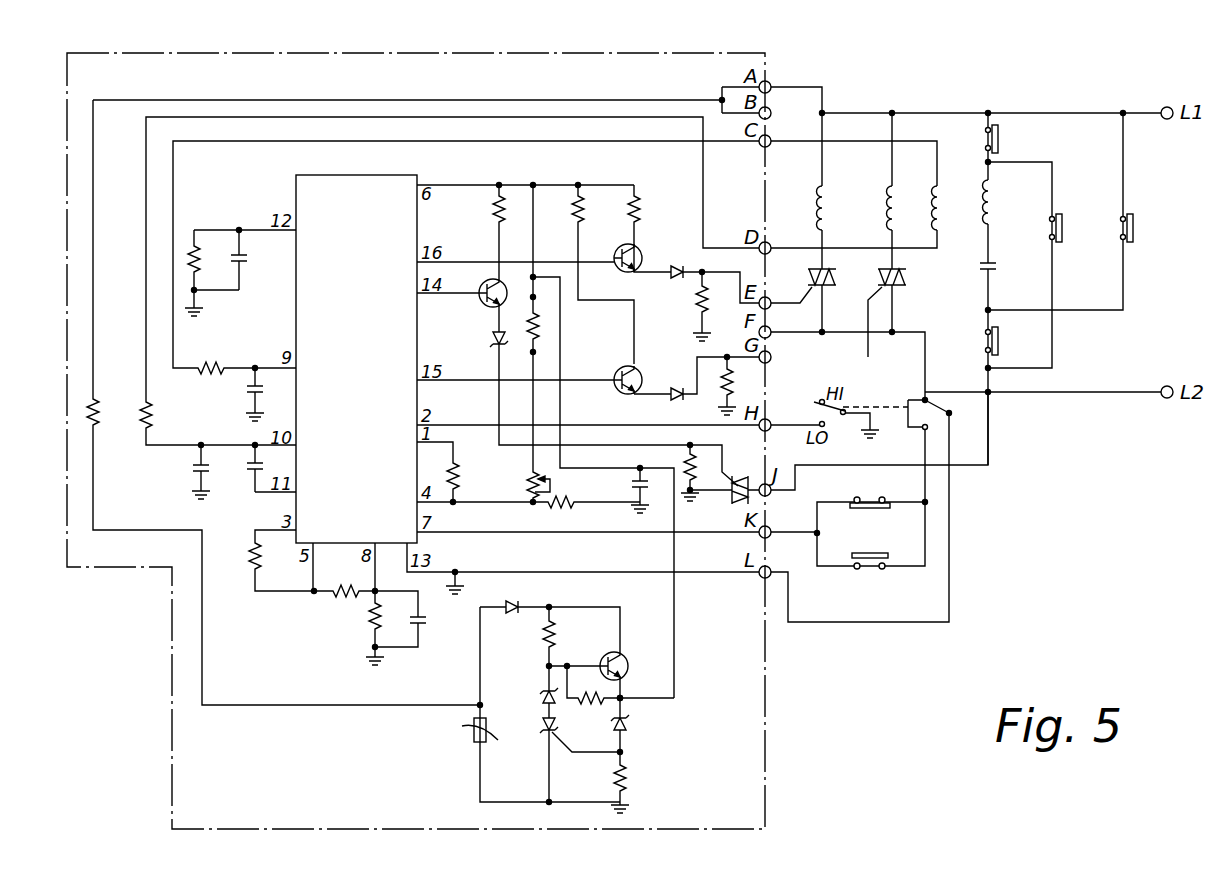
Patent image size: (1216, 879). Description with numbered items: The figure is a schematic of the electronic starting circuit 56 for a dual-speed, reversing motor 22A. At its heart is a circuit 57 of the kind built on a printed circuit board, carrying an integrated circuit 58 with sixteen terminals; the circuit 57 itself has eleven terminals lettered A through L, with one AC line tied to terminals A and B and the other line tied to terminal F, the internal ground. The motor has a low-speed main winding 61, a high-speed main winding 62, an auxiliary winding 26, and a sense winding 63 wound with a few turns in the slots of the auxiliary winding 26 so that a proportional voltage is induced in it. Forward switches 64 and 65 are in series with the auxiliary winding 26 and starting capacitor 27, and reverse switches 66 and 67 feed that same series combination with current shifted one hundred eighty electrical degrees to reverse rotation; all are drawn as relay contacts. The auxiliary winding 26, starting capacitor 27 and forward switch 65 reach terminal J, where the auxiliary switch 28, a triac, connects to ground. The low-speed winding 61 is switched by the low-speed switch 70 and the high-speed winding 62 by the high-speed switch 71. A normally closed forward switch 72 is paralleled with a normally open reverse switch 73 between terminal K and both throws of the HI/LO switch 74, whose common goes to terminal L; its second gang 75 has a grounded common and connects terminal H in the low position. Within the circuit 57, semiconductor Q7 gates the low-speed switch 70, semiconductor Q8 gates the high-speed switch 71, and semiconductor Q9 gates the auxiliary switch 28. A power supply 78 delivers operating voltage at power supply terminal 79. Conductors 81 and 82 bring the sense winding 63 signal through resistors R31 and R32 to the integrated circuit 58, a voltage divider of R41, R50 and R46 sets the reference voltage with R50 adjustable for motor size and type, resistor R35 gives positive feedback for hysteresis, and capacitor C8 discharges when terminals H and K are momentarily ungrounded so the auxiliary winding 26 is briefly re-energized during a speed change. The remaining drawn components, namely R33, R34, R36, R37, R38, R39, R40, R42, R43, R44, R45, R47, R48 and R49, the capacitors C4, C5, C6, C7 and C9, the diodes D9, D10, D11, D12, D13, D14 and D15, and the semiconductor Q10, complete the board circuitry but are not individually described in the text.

The circuit 57 is at (440, 53).
The electronic starting circuit 56 is at (808, 75).
The conductor 82 is at (238, 118).
The conductor 81 is at (238, 144).
The integrated circuit 58 is at (396, 180).
The resistor R33 is at (198, 264).
The capacitor C4 is at (244, 262).
The resistor R34 is at (97, 418).
The resistor R32 is at (150, 420).
The resistor R31 is at (211, 358).
The capacitor C5 is at (259, 392).
The capacitor C6 is at (196, 466).
The capacitor C7 is at (266, 462).
The resistor R35 is at (252, 562).
The resistor R36 is at (342, 581).
The resistor R37 is at (370, 617).
The capacitor C8 is at (422, 624).
The resistor R38 is at (496, 212).
The resistor R39 is at (582, 218).
The resistor R40 is at (638, 218).
The resistor R41 is at (540, 328).
The semiconductor Q9 is at (486, 303).
The zener diode D9 is at (492, 338).
The semiconductor Q7 is at (643, 267).
The diode D10 is at (660, 282).
The resistor R43 is at (698, 300).
The semiconductor Q8 is at (641, 382).
The diode D11 is at (670, 398).
The resistor R44 is at (732, 390).
The resistor R45 is at (458, 480).
The resistor R50 is at (533, 488).
The resistor R46 is at (562, 510).
The capacitor C9 is at (636, 486).
The resistor R42 is at (686, 464).
The auxiliary switch 28 is at (748, 482).
The power supply 78 is at (638, 630).
The diode D12 is at (508, 608).
The resistor R47 is at (553, 645).
The transistor Q10 is at (628, 672).
The zener diode D15 is at (544, 696).
The resistor R49 is at (588, 691).
The power supply terminal 79 is at (623, 697).
The zener diode D13 is at (544, 724).
The zener diode D14 is at (627, 726).
The resistor R48 is at (640, 779).
The low-speed main winding 61 is at (826, 192).
The high-speed main winding 62 is at (896, 190).
The sense winding 63 is at (934, 205).
The motor 22A is at (880, 228).
The forward switch 64 is at (1000, 138).
The auxiliary winding 26 is at (994, 205).
The starting capacitor 27 is at (994, 270).
The forward switch 65 is at (1000, 340).
The reverse switch 67 is at (1064, 228).
The reverse switch 66 is at (1135, 228).
The low-speed switch 70 is at (832, 270).
The high-speed switch 71 is at (902, 270).
The normally closed forward switch 72 is at (878, 509).
The normally open reverse switch 73 is at (880, 552).
The HI/LO switch 74 is at (938, 420).
The second gang of HI/LO switch 75 is at (838, 417).